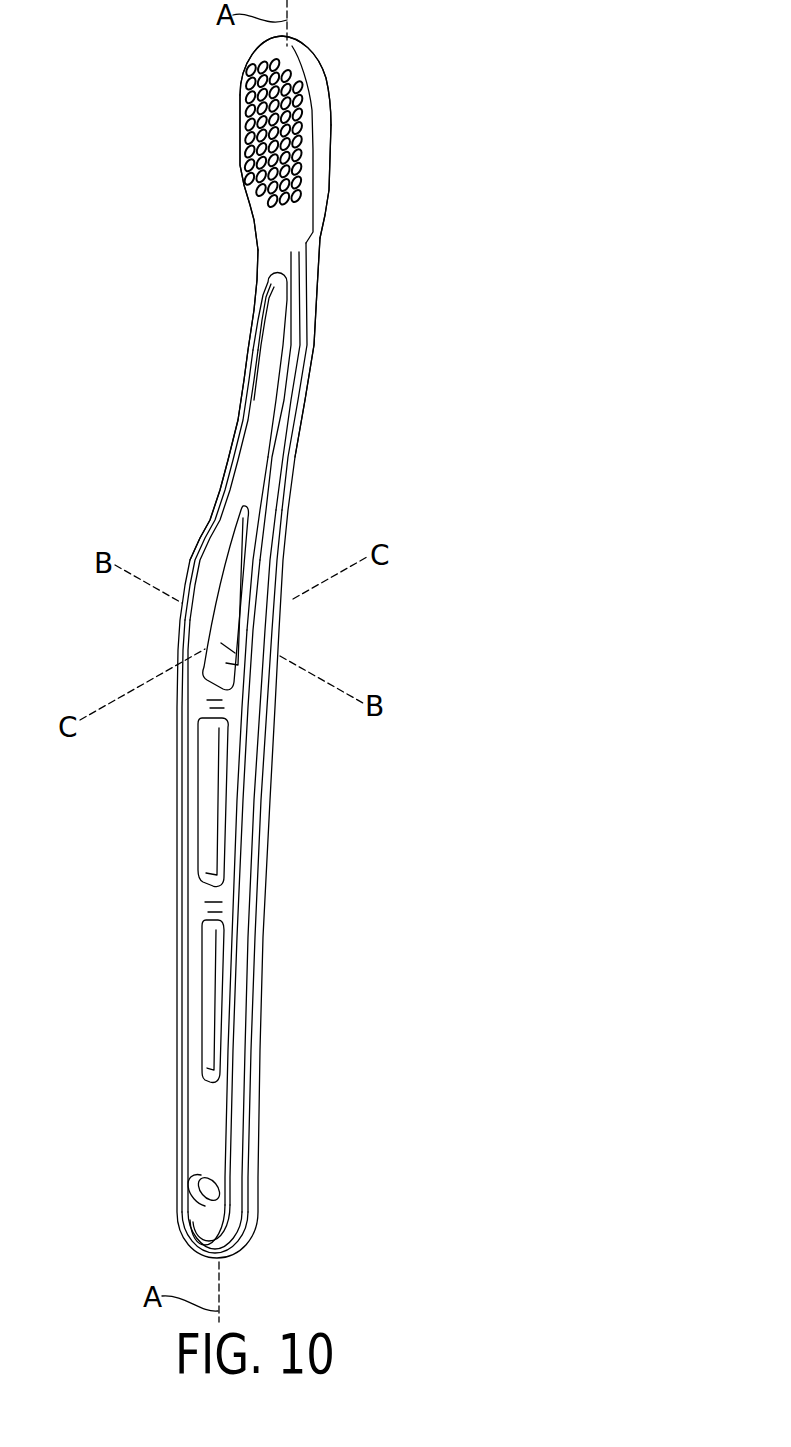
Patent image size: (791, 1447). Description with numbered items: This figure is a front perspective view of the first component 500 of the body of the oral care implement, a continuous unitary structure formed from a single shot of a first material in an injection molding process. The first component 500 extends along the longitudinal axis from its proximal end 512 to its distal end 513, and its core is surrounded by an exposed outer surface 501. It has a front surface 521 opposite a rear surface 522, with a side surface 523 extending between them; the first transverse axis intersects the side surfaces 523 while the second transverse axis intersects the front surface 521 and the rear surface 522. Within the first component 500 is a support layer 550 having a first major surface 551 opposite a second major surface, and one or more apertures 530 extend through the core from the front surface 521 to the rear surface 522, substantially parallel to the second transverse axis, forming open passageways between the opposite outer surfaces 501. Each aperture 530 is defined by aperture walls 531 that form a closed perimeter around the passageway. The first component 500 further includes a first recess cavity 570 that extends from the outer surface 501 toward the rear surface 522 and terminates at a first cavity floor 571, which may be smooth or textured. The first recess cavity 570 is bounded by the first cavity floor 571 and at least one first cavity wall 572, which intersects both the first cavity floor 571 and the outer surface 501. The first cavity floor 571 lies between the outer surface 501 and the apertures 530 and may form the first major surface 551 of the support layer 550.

The first component 500 is at (323, 492).
The outer surface 501 is at (266, 229).
The proximal end 512 is at (213, 1260).
The distal end 513 is at (297, 44).
The front surface 521 is at (268, 247).
The rear surface 522 is at (316, 284).
The side surface 523 is at (280, 585).
The aperture 530 is at (232, 620).
The aperture wall 531 is at (229, 583).
The support layer 550 is at (217, 713).
The first major surface 551 is at (220, 720).
The first recess cavity 570 is at (273, 362).
The first cavity floor 571 is at (262, 420).
The first cavity wall 572 is at (196, 773).